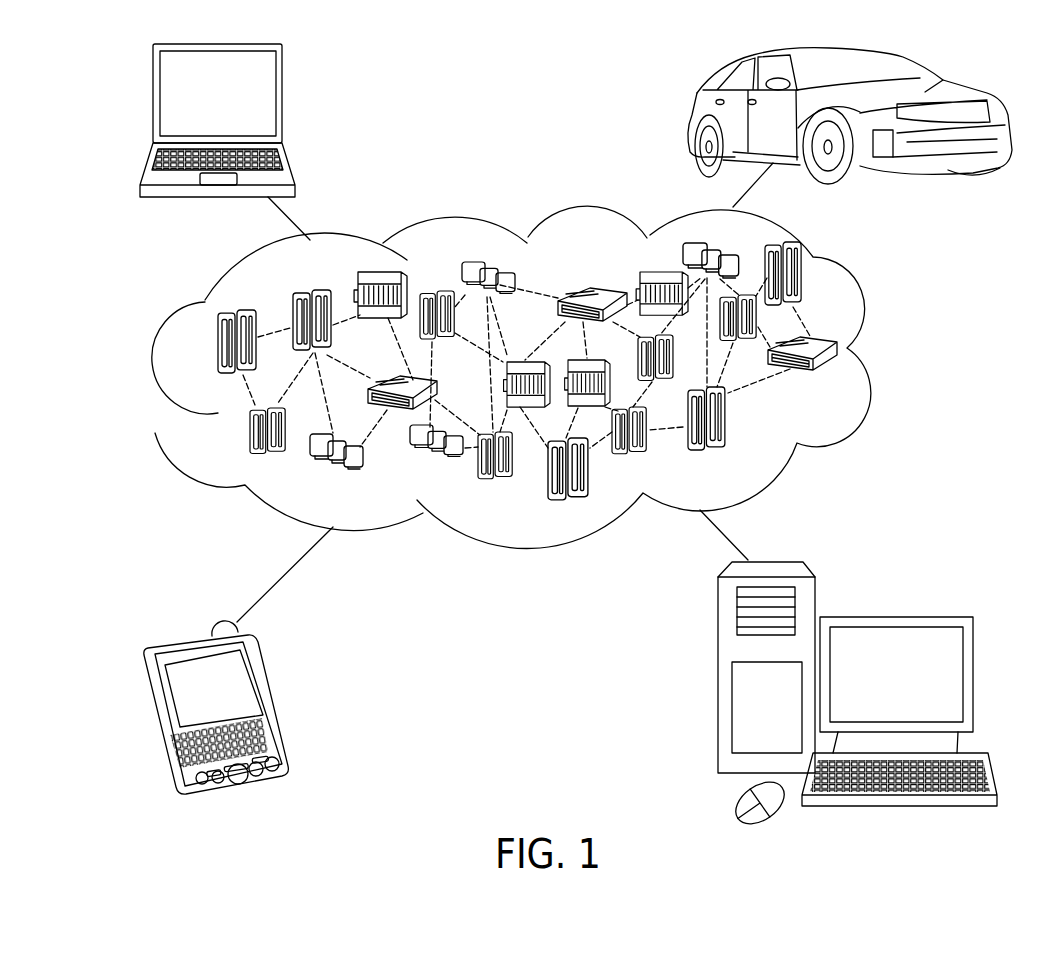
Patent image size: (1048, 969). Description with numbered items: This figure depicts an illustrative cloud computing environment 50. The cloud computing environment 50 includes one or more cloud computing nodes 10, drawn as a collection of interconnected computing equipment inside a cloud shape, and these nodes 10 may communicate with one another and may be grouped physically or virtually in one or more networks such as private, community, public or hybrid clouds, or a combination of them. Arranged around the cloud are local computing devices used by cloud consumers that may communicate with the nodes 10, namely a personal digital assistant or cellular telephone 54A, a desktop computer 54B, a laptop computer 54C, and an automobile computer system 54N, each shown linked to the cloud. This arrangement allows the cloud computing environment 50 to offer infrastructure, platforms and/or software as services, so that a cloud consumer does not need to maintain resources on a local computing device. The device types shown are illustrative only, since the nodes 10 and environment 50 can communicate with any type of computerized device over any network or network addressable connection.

The cloud computing node 10 is at (848, 383).
The cloud computing environment 50 is at (551, 377).
The personal digital assistant (PDA) or cellular telephone 54A is at (273, 704).
The desktop computer 54B is at (893, 617).
The laptop computer 54C is at (282, 103).
The automobile computer system 54N is at (692, 120).